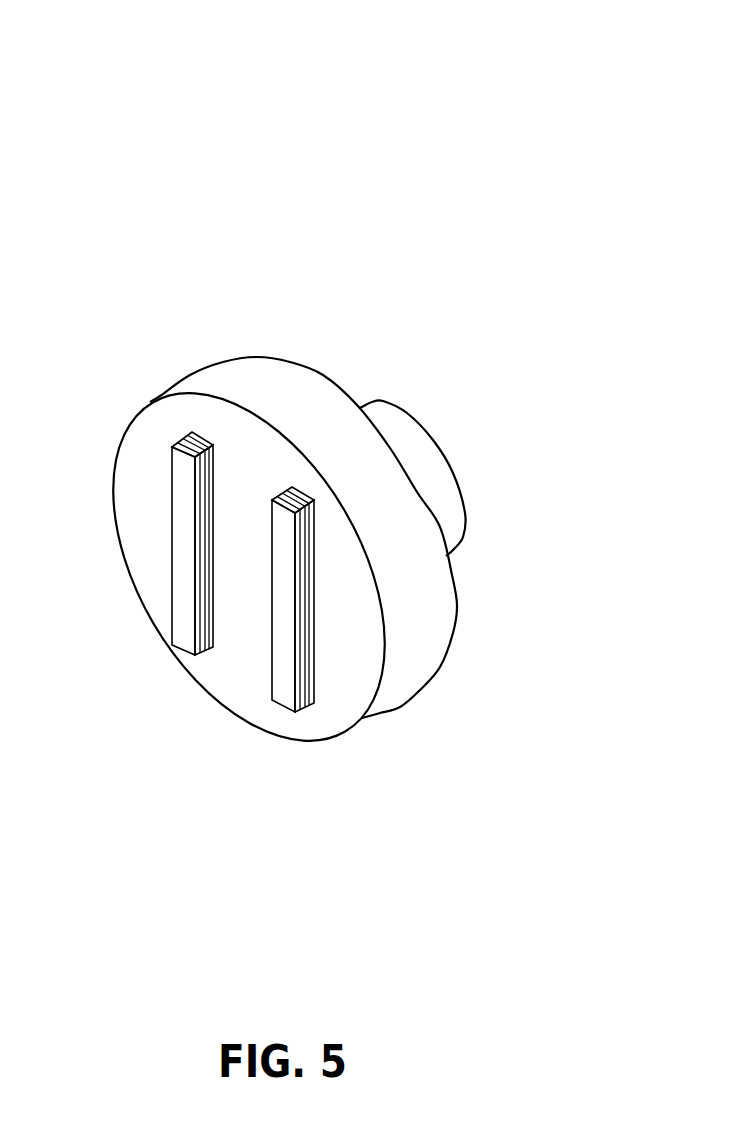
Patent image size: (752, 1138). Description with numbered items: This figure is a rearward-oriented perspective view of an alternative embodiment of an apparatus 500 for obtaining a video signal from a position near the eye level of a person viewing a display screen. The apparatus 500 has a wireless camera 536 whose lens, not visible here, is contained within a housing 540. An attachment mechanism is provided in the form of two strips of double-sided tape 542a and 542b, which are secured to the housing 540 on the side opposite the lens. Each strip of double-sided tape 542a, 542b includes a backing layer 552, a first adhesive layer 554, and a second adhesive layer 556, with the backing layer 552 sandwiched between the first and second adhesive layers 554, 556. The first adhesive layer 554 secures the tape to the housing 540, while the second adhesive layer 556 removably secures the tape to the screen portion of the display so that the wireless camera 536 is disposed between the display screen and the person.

The apparatus 500 is at (363, 414).
The wireless camera 536 is at (473, 443).
The housing 540 is at (302, 383).
The strip of double-sided tape 542a is at (177, 653).
The strip of double-sided tape 542b is at (307, 710).
The backing layer 552 is at (190, 435).
The first adhesive layer 554 is at (200, 435).
The second adhesive layer 556 is at (180, 497).